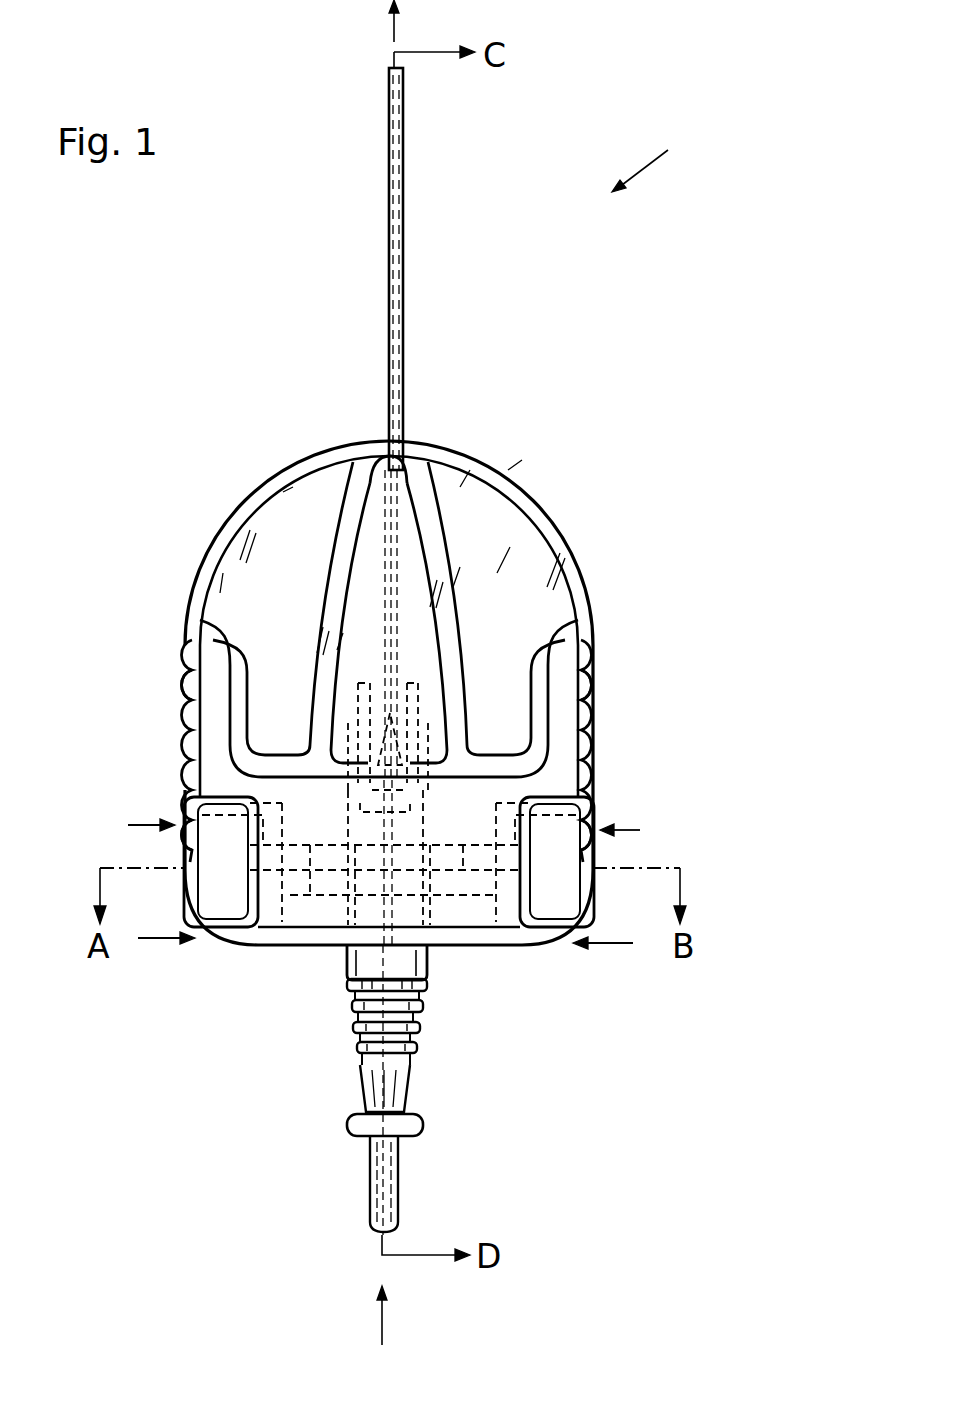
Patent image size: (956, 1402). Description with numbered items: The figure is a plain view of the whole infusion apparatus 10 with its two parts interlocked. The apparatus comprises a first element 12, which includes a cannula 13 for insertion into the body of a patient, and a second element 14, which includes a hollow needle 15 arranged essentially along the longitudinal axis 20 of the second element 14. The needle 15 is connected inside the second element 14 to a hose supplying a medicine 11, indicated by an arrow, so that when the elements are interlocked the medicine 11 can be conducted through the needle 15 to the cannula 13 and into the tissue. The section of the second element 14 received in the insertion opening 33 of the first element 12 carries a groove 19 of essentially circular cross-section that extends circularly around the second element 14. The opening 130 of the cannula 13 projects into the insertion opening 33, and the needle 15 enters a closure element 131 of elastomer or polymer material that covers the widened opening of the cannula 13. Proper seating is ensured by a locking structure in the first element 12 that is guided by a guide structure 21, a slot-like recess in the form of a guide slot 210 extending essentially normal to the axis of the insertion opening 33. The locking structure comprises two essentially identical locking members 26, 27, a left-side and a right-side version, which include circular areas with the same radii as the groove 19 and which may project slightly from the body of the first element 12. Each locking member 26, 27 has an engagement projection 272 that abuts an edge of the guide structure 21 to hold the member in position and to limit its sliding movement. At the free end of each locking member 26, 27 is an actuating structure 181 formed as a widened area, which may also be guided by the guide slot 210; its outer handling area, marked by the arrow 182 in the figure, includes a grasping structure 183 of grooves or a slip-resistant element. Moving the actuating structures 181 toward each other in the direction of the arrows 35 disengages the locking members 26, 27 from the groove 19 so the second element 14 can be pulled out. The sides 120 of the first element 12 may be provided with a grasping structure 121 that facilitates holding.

The infusion apparatus 10 is at (659, 165).
The medicine 11 is at (390, 34).
The first element 12 is at (562, 525).
The cannula 13 is at (388, 222).
The second element 14 is at (422, 988).
The needle 15 is at (385, 828).
The groove 19 is at (467, 886).
The longitudinal axis 20 is at (376, 1147).
The guide structure 21 is at (305, 845).
The locking member 26 is at (272, 855).
The locking member 27 is at (423, 875).
The insertion opening 33 is at (345, 948).
The arrows 35 is at (157, 938).
The sides 120 is at (184, 637).
The grasping structure 121 is at (180, 677).
The opening 130 is at (400, 750).
The closure element 131 is at (400, 783).
The actuating structure 181 is at (213, 797).
The direction arrow 182 is at (147, 824).
The grasping structure 183 is at (180, 854).
The guide slot 210 is at (217, 797).
The engagement projection 272 is at (368, 700).